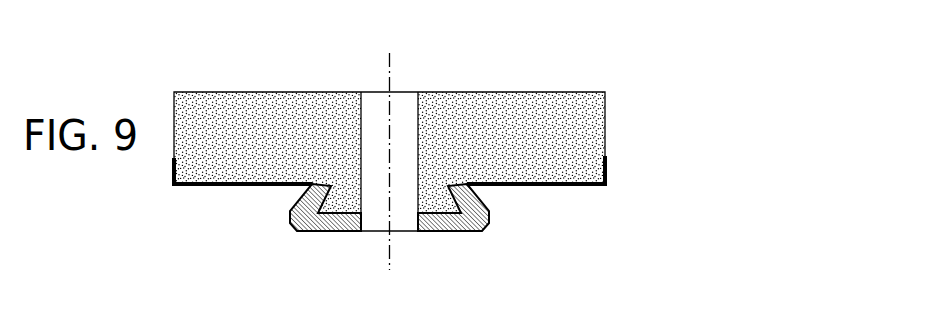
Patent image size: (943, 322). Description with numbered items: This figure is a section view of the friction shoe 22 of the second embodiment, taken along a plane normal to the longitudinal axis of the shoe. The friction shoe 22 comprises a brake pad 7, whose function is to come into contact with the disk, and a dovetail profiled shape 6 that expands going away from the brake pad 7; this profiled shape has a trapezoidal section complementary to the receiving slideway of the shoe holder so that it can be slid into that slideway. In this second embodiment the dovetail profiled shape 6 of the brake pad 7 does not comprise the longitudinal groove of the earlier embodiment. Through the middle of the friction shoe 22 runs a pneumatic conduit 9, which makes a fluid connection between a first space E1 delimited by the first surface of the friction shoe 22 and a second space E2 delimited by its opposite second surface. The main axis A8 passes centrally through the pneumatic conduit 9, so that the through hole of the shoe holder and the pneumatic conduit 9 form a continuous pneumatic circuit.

The brake pad 7 is at (232, 90).
The friction shoe 22 is at (567, 130).
The pneumatic conduit 9 is at (420, 113).
The first space E1 is at (363, 92).
The second space E2 is at (373, 233).
The main axis A8 is at (386, 149).
The dovetail profiled shape 6 is at (458, 223).